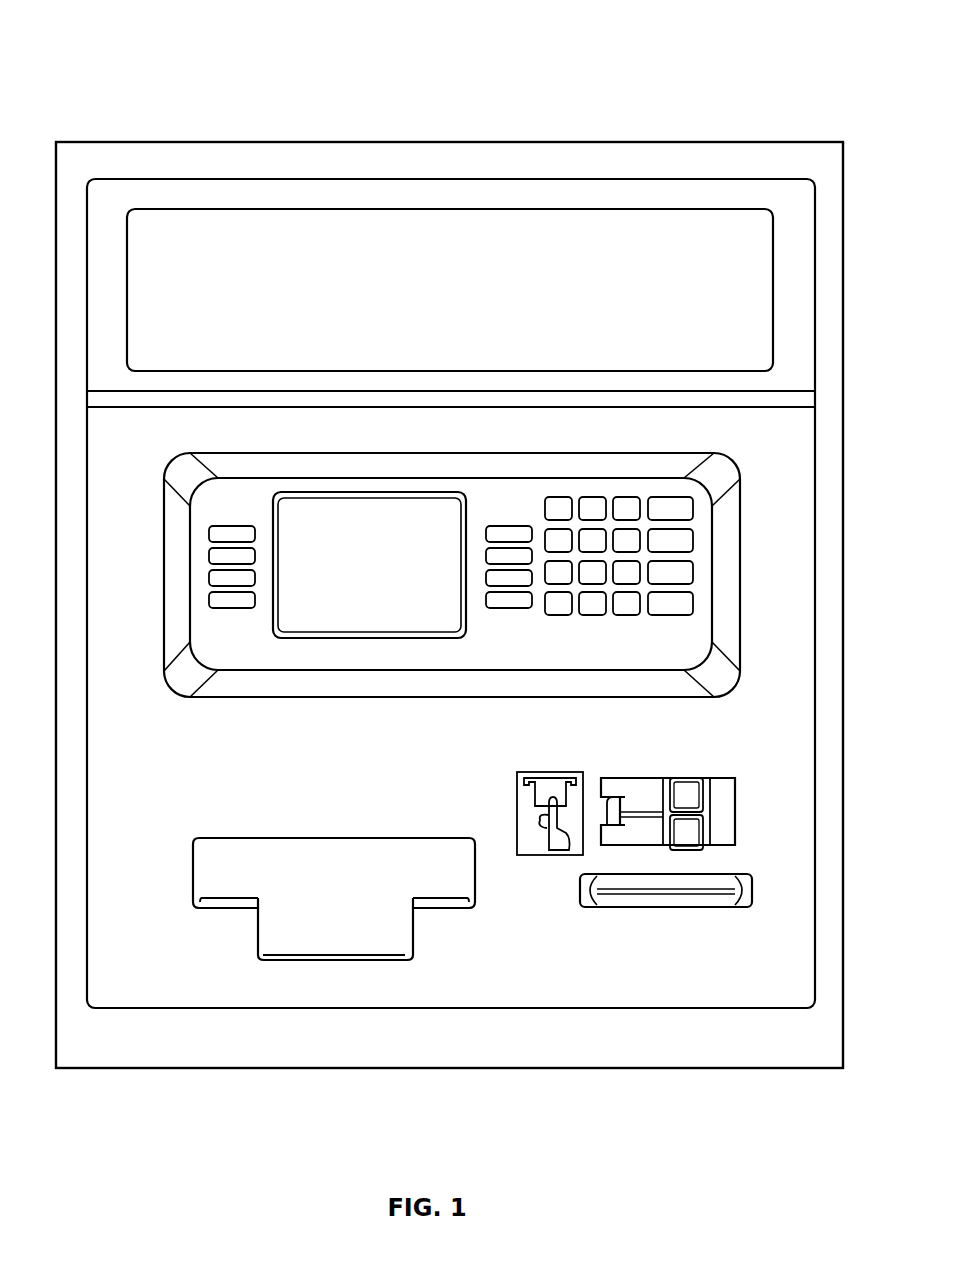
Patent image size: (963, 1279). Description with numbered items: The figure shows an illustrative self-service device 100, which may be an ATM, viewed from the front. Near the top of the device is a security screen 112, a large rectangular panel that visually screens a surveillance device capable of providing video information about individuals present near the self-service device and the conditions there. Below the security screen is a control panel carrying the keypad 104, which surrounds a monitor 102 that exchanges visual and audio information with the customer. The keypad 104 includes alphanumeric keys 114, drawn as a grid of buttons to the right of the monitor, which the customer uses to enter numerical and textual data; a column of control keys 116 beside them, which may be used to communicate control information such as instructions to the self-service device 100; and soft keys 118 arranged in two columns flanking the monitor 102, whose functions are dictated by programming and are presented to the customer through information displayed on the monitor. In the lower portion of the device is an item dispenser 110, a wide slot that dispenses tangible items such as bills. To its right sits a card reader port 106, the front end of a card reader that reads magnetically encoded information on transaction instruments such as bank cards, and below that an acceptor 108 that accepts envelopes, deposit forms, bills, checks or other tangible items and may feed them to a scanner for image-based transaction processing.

The self-service device 100 is at (106, 46).
The monitor 102 is at (398, 495).
The keypad 104 is at (500, 650).
The card reader port 106 is at (735, 777).
The acceptor 108 is at (731, 875).
The item dispenser 110 is at (220, 836).
The security screen 112 is at (690, 209).
The alphanumeric keys 114 is at (556, 615).
The control keys 116 is at (677, 490).
The soft keys 118 is at (236, 515).